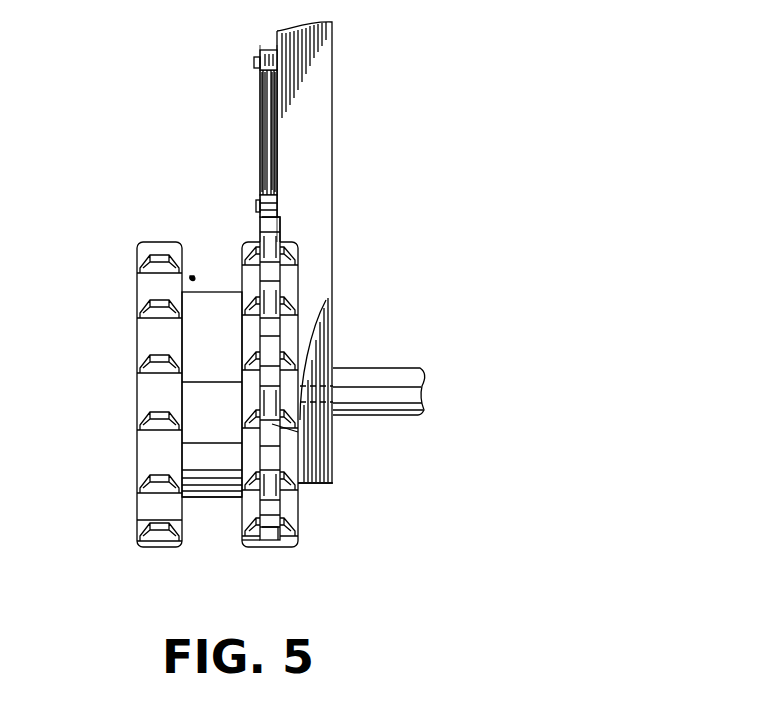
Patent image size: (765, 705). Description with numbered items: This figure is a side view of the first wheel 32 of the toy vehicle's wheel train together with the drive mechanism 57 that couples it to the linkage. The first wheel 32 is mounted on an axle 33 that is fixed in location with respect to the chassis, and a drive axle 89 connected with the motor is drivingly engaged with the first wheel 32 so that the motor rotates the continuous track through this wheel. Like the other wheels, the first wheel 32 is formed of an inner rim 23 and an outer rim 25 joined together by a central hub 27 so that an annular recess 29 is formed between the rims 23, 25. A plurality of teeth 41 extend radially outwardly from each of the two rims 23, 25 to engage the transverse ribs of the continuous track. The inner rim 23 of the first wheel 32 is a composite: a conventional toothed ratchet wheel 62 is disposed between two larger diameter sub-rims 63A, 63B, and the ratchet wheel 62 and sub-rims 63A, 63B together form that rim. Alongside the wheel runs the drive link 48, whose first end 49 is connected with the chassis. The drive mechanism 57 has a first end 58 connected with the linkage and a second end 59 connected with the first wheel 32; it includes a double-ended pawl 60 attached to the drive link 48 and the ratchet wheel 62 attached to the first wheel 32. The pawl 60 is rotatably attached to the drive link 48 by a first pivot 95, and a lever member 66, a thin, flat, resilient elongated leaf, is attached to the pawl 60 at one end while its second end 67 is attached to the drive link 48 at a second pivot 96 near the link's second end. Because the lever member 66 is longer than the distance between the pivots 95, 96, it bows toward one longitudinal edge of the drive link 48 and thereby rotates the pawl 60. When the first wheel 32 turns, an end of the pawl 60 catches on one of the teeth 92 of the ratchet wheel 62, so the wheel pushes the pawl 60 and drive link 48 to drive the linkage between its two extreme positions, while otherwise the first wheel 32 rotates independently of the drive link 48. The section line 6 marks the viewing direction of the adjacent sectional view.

The section line 6- 6 is at (260, 0).
The inner rim 23 is at (235, 507).
The outer rim 25 is at (130, 548).
The central hub 27 is at (212, 289).
The annular recess 29 is at (192, 277).
The first wheel 32 is at (128, 460).
The axle 33 is at (326, 373).
The teeth 41 is at (139, 362).
The drive link 48 is at (318, 170).
The first end of drive link 49 is at (326, 480).
The drive mechanism 57 is at (224, 166).
The first end of drive mechanism 58 is at (261, 151).
The second end of drive mechanism 59 is at (271, 337).
The pawl 60 is at (286, 225).
The ratchet wheel 62 is at (276, 530).
The sub-rim 63A is at (244, 508).
The sub-rim 63B is at (293, 503).
The lever member 66 is at (257, 113).
The second end of lever member 67 is at (268, 99).
The drive axle 89 is at (395, 372).
The ratchet teeth 92 is at (318, 432).
The first pivot 95 is at (256, 206).
The second pivot 96 is at (259, 62).